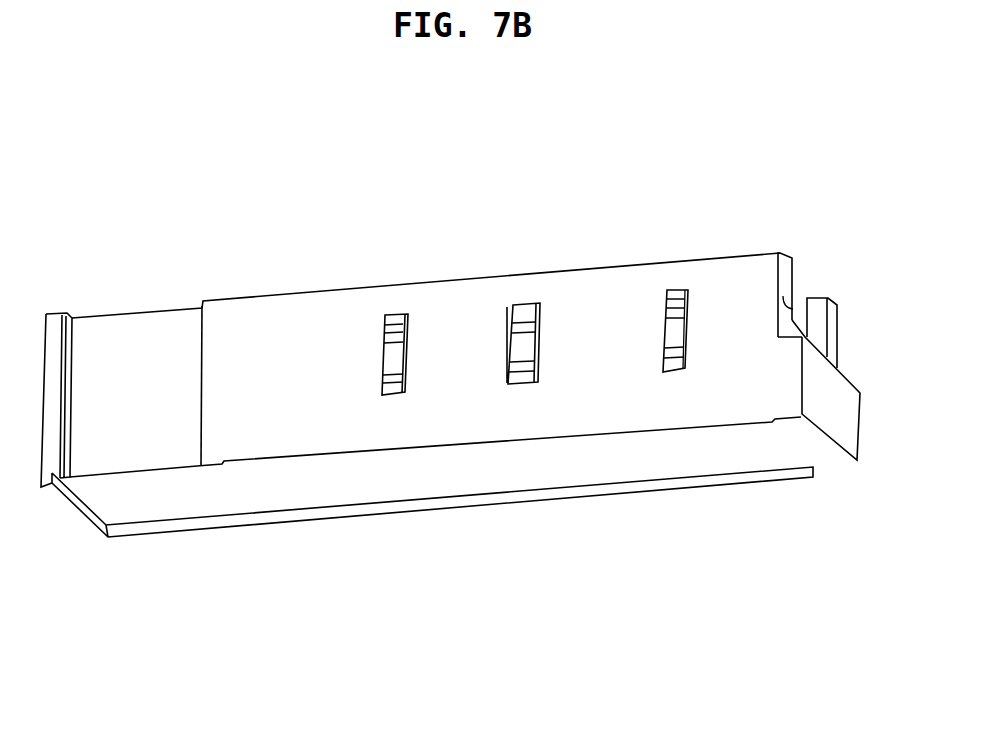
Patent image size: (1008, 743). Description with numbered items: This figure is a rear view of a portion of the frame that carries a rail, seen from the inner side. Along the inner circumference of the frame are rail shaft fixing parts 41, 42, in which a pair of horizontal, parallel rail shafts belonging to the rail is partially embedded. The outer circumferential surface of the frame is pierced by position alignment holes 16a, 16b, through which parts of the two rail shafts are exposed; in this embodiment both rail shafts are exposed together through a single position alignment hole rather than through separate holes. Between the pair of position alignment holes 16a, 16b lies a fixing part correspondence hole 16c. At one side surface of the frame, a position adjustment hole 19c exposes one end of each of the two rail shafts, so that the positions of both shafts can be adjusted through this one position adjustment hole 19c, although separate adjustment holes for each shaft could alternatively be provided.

The first shaft position alignment hole 16a is at (385, 357).
The first shaft position alignment hole 16b is at (662, 327).
The first fixing part correspondence hole 16c is at (508, 308).
The position adjustment hole 19c is at (795, 285).
The rail shaft fixing part 41 is at (398, 368).
The rail shaft fixing part 42 is at (678, 342).